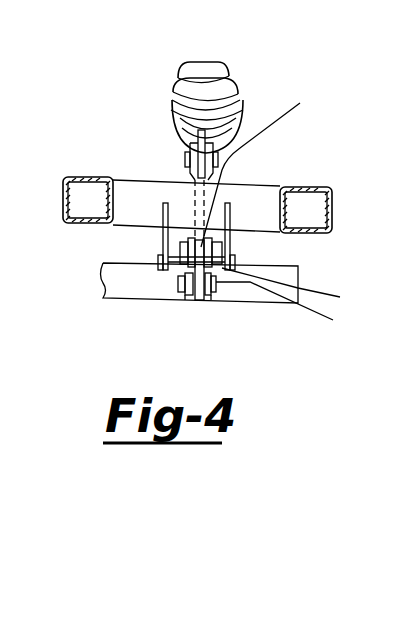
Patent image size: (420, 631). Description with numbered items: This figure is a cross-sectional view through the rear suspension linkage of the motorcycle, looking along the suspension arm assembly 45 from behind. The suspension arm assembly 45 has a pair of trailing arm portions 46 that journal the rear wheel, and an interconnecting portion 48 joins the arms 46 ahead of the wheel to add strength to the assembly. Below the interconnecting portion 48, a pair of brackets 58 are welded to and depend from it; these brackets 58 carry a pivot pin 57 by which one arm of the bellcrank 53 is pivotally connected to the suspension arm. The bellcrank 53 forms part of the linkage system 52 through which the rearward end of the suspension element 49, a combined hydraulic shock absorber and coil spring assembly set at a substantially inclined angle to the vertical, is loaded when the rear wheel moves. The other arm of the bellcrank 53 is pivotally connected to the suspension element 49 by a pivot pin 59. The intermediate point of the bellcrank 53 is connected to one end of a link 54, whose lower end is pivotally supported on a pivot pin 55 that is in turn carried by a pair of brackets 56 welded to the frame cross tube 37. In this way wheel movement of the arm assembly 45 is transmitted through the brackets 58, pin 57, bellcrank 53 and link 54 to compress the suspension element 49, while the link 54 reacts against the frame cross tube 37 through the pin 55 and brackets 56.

The cross tube 37 is at (262, 298).
The suspension arm assembly 45 is at (266, 182).
The trailing arm portions 46 is at (92, 226).
The interconnecting portion 48 is at (138, 190).
The suspension element 49 is at (236, 80).
The linkage system 52 is at (182, 260).
The bellcrank 53 is at (217, 175).
The link 54 is at (192, 300).
The pivot pin 55 is at (291, 311).
The brackets 56 is at (185, 296).
The pivot pin 57 is at (299, 289).
The brackets 58 is at (160, 253).
The pivot pin 59 is at (269, 165).